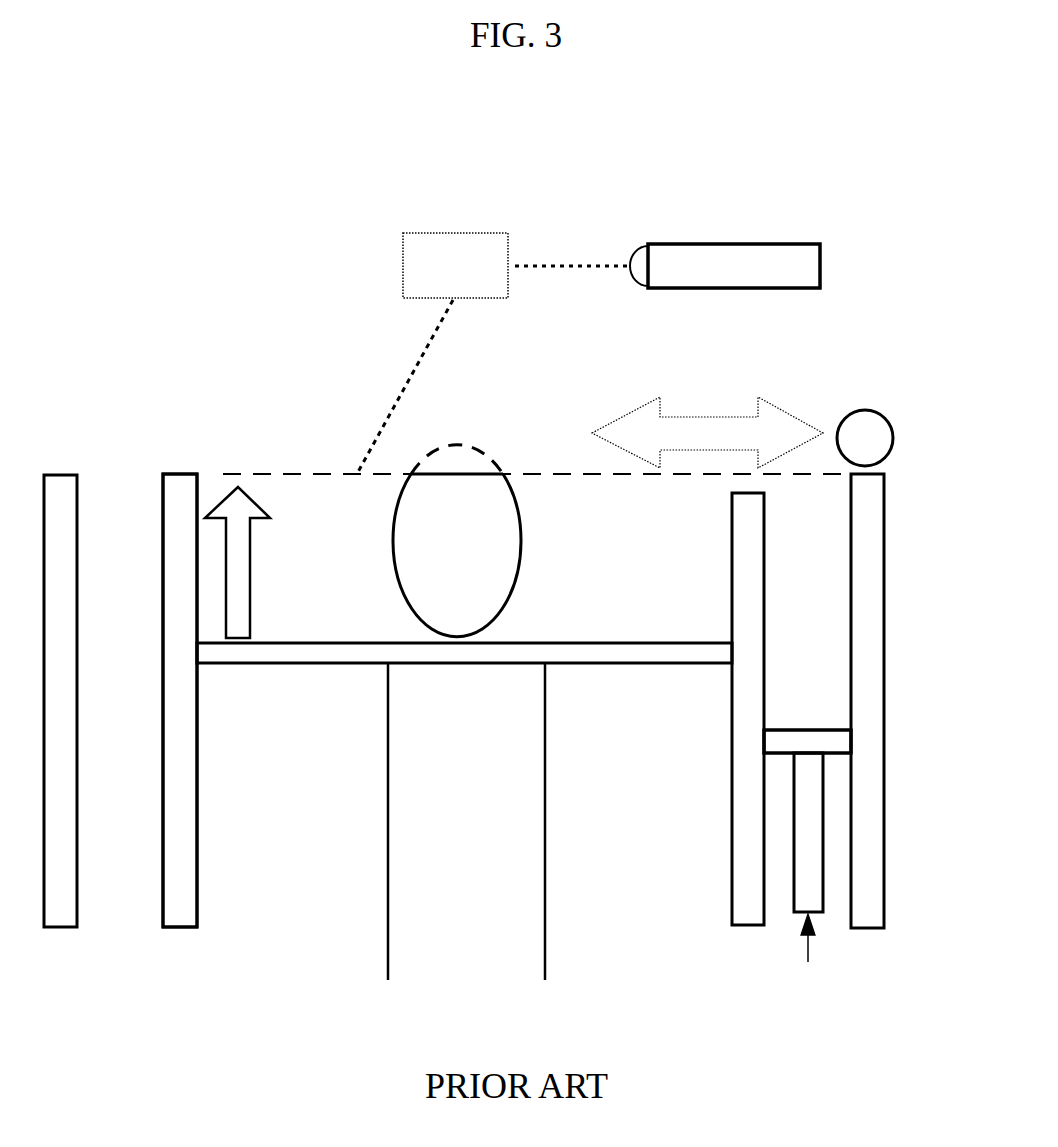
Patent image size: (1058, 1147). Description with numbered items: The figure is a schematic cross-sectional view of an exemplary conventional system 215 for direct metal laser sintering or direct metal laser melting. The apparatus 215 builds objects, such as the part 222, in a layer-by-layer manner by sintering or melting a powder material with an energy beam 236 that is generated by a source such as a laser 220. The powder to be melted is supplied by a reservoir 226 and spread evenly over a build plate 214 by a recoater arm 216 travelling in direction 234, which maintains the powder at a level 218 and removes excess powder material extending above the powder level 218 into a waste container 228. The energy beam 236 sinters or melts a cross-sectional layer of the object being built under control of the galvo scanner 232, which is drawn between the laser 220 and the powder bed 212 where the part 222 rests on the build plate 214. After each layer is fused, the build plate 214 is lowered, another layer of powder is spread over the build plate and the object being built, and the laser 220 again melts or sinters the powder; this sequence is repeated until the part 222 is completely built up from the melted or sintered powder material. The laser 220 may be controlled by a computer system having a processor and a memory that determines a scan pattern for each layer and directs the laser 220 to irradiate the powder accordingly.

The powder bed 212 is at (613, 537).
The build plate 214 is at (677, 643).
The conventional system 215 is at (208, 317).
The recoater arm 216 is at (865, 410).
The powder level 218 is at (263, 474).
The laser 220 is at (678, 244).
The part 222 is at (396, 548).
The reservoir 226 is at (815, 577).
The waste container 228 is at (147, 817).
The galvo scanner 232 is at (455, 233).
The direction 234 is at (638, 405).
The energy beam 236 is at (407, 385).